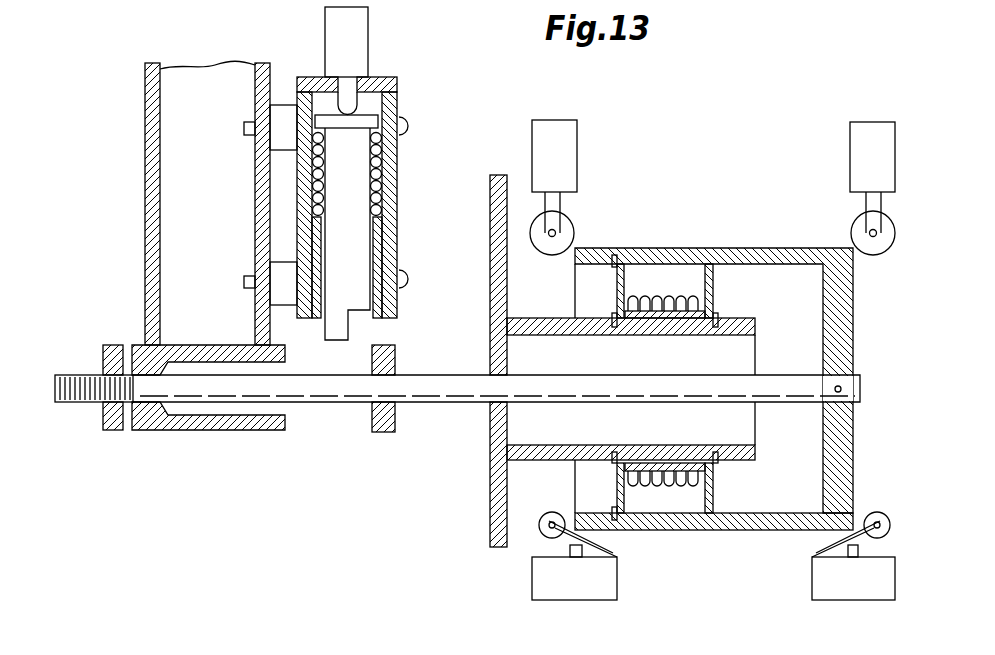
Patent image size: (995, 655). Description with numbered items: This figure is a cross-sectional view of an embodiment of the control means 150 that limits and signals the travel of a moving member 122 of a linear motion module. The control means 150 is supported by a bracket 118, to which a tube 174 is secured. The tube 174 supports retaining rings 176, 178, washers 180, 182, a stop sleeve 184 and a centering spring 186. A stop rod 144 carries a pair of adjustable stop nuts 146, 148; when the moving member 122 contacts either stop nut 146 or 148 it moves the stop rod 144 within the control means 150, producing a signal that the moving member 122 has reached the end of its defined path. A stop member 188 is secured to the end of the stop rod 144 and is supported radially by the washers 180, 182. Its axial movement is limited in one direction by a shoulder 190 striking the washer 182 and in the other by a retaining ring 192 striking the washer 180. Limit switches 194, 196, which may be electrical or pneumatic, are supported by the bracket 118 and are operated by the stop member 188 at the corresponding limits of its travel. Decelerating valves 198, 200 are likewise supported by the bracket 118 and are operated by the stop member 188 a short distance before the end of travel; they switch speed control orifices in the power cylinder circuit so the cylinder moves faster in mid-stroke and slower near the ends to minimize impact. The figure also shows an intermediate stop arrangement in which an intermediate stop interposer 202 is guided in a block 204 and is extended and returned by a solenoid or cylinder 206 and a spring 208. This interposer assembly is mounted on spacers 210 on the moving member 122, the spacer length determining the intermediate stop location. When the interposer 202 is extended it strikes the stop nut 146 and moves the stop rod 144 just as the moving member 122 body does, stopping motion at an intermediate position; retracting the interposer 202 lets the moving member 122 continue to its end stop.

The bracket 118 is at (490, 238).
The moving member 122 is at (145, 115).
The stop rod 144 is at (78, 402).
The stop nut 146 is at (383, 432).
The stop nut 148 is at (113, 432).
The control means 150 is at (860, 334).
The tube 174 is at (490, 495).
The retaining ring 176 is at (496, 372).
The retaining ring 178 is at (722, 313).
The washer 180 is at (617, 487).
The washer 182 is at (717, 482).
The stop sleeve 184 is at (685, 465).
The centering spring 186 is at (695, 537).
The stop member 188 is at (675, 531).
The shoulder 190 is at (713, 267).
The retaining ring 192 is at (618, 247).
The limit switch 194 is at (578, 600).
The limit switch 196 is at (843, 600).
The decelerating valve 198 is at (577, 163).
The decelerating valve 200 is at (850, 143).
The intermediate stop interposer 202 is at (350, 325).
The block 204 is at (397, 225).
The solenoid or cylinder 206 is at (368, 37).
The spring 208 is at (382, 163).
The spacers 210 is at (288, 104).